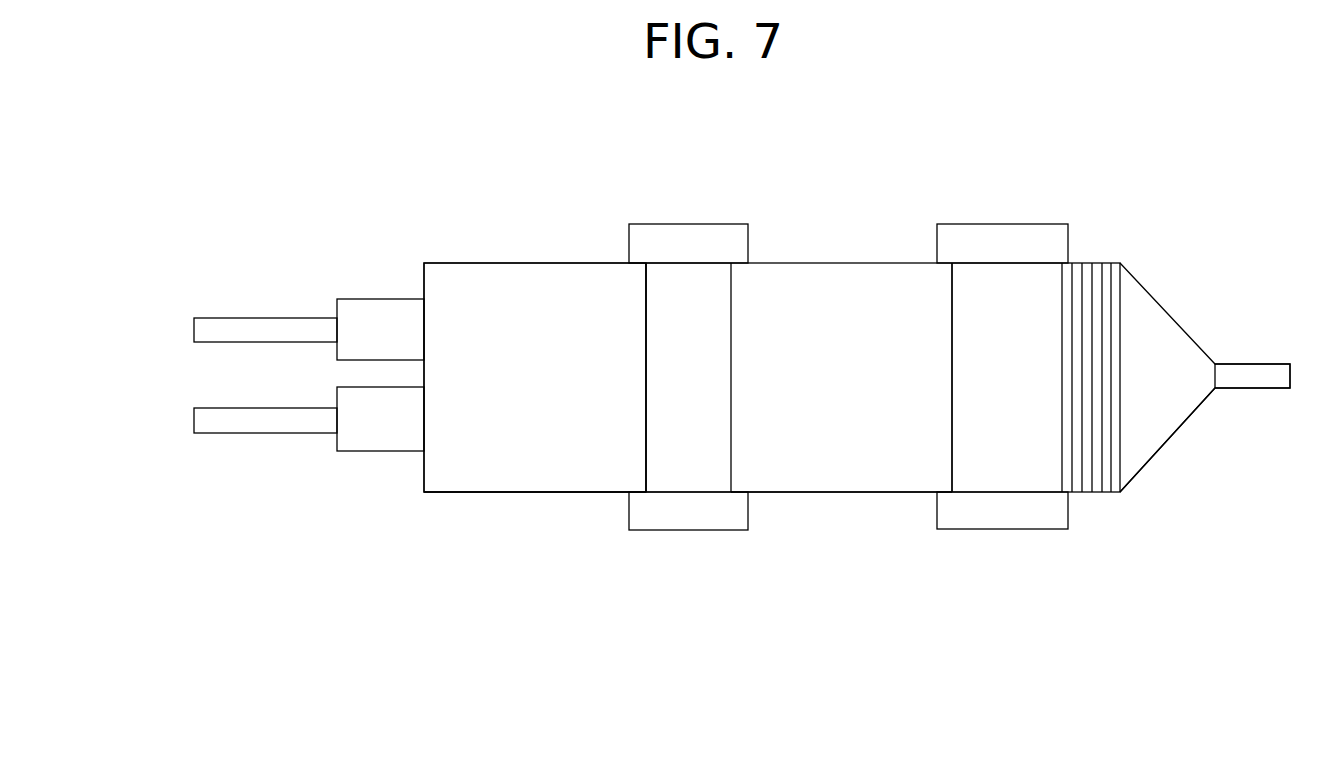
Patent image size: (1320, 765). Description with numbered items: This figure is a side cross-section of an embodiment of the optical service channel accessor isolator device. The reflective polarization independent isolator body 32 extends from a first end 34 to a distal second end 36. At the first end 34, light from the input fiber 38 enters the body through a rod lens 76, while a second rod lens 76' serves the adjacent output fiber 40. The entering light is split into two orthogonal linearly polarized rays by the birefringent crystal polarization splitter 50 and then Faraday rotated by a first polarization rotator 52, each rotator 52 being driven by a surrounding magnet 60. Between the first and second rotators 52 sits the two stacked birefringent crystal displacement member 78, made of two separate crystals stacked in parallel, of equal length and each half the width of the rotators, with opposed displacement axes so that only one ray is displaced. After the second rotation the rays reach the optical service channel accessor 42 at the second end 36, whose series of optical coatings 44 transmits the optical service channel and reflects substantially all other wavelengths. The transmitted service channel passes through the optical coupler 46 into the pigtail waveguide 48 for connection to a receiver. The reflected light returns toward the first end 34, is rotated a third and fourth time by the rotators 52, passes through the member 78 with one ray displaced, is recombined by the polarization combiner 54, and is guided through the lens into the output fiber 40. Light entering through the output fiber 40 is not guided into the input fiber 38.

The isolator longitudinal body 32 is at (817, 193).
The first end 34 is at (447, 130).
The second end 36 is at (1121, 195).
The input optical fiber 38 is at (185, 333).
The output optical fiber 40 is at (185, 420).
The optical service channel accessor 42 is at (1192, 553).
The series of optical coatings 44 is at (1102, 530).
The optical service channel optical coupler 46 is at (1168, 440).
The optical service channel pigtail waveguide 48 is at (1252, 362).
The polarization splitter 50 is at (517, 263).
The polarization rotator 52 is at (687, 493).
The polarization combiner 54 is at (460, 492).
The magnet 60 is at (678, 224).
The rod lens 76 is at (380, 297).
The rod lens 76' is at (380, 458).
The two stacked birefringent crystal displacement member 78 is at (845, 493).